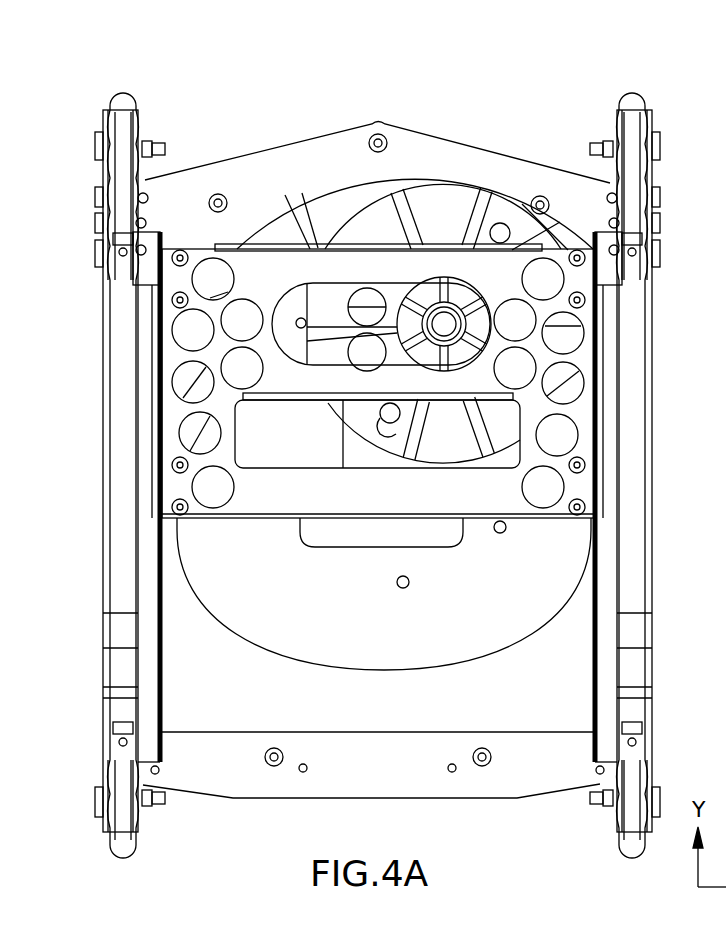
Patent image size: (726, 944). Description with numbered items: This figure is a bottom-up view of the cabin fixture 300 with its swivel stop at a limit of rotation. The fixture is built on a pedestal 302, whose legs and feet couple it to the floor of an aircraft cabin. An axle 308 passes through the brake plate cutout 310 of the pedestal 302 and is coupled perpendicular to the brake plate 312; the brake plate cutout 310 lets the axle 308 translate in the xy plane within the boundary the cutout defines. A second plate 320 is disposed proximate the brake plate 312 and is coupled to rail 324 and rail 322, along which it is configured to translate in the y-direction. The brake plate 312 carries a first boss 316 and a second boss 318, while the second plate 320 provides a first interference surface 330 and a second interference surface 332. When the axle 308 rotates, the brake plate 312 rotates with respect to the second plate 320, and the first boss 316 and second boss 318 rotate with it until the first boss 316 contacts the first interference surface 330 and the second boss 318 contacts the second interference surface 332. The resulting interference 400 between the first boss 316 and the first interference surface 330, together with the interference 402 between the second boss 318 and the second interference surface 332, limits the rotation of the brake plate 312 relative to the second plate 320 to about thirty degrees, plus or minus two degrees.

The cabin fixture 300 is at (545, 98).
The pedestal 302 is at (262, 178).
The axle 308 is at (428, 327).
The brake plate cutout 310 is at (432, 548).
The brake plate 312 is at (344, 317).
The first boss 316 is at (508, 236).
The second boss 318 is at (372, 402).
The second plate 320 is at (440, 504).
The rail 322 is at (606, 503).
The rail 324 is at (152, 437).
The first interference surface 330 is at (312, 248).
The second interference surface 332 is at (256, 400).
The interference 400 is at (500, 233).
The interference 402 is at (400, 410).